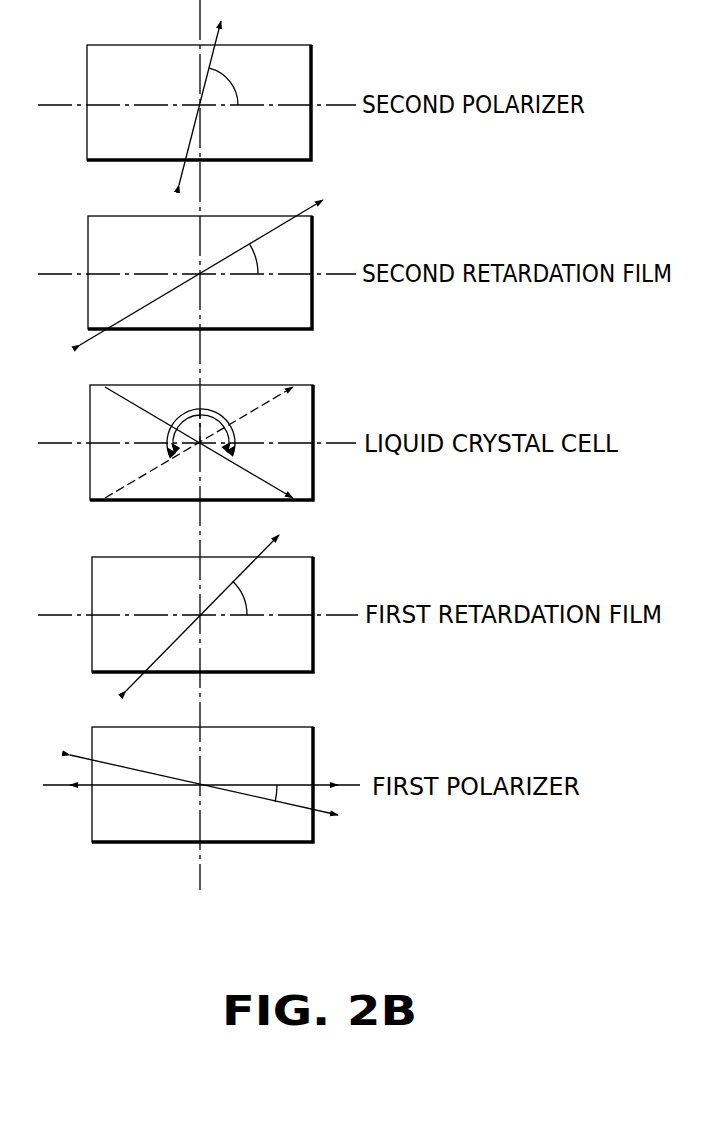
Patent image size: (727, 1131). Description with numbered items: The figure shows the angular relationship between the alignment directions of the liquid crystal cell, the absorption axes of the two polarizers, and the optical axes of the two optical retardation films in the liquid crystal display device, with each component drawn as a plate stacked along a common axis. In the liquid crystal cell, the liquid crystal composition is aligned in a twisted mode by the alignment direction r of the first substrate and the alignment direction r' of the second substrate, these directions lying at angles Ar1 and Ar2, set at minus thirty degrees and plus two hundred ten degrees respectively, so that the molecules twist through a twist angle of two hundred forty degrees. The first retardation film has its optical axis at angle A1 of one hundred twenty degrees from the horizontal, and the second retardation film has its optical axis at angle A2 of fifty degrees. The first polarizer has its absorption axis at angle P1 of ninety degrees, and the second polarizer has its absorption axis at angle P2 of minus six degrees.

The absorption axis angle of second polarizer P2 is at (218, 103).
The optical axis angle of second optical retardation film A2 is at (201, 272).
The angle of alignment direction r Ar1 is at (186, 419).
The angle of alignment direction r' Ar2 is at (240, 452).
The alignment direction of first substrate r is at (201, 442).
The alignment direction of second substrate r' is at (202, 442).
The optical axis angle of first optical retardation film A1 is at (202, 613).
The absorption axis angle of first polarizer P1 is at (276, 797).